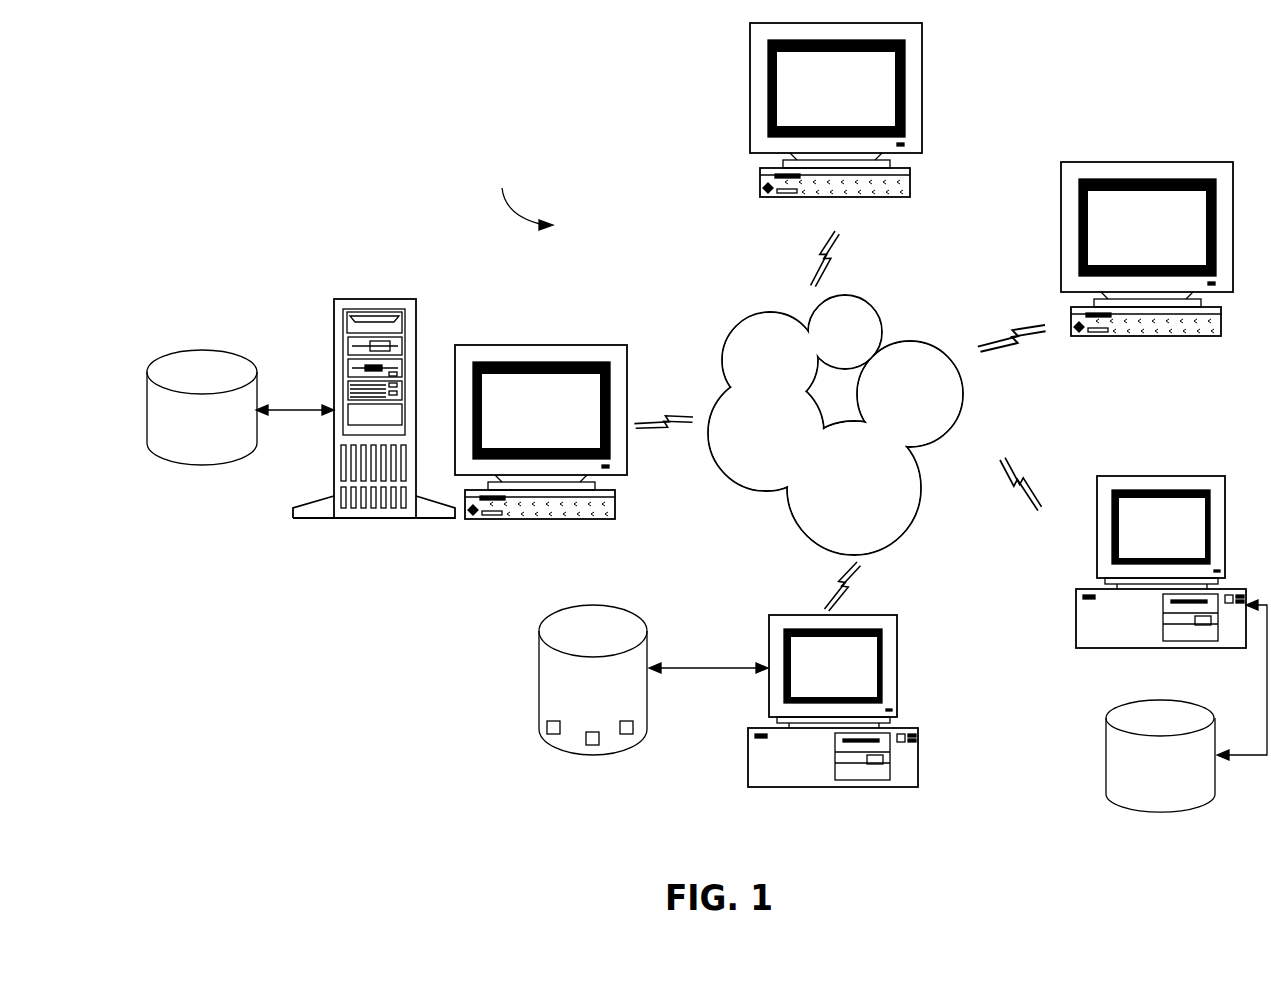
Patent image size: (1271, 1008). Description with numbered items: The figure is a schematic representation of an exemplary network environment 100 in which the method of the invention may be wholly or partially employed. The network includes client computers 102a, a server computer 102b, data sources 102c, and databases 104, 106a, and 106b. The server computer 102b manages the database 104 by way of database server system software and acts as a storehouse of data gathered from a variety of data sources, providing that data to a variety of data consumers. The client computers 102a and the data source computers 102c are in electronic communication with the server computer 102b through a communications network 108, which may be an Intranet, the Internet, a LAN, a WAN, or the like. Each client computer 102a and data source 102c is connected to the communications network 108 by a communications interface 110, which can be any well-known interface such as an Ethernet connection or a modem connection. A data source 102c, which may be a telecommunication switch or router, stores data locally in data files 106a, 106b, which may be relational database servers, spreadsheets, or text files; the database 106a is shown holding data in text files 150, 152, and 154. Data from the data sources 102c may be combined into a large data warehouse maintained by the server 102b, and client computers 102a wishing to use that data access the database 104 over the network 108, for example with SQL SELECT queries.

The network environment 100 is at (519, 197).
The client computer 102a is at (750, 112).
The server computer 102b is at (375, 299).
The data source 102c is at (898, 658).
The database 104 is at (207, 352).
The data file 106a is at (598, 605).
The data file 106b is at (1103, 761).
The communications network 108 is at (742, 320).
The communications interface 110 is at (820, 262).
The text file 150 is at (546, 727).
The text file 152 is at (592, 745).
The text file 154 is at (633, 727).